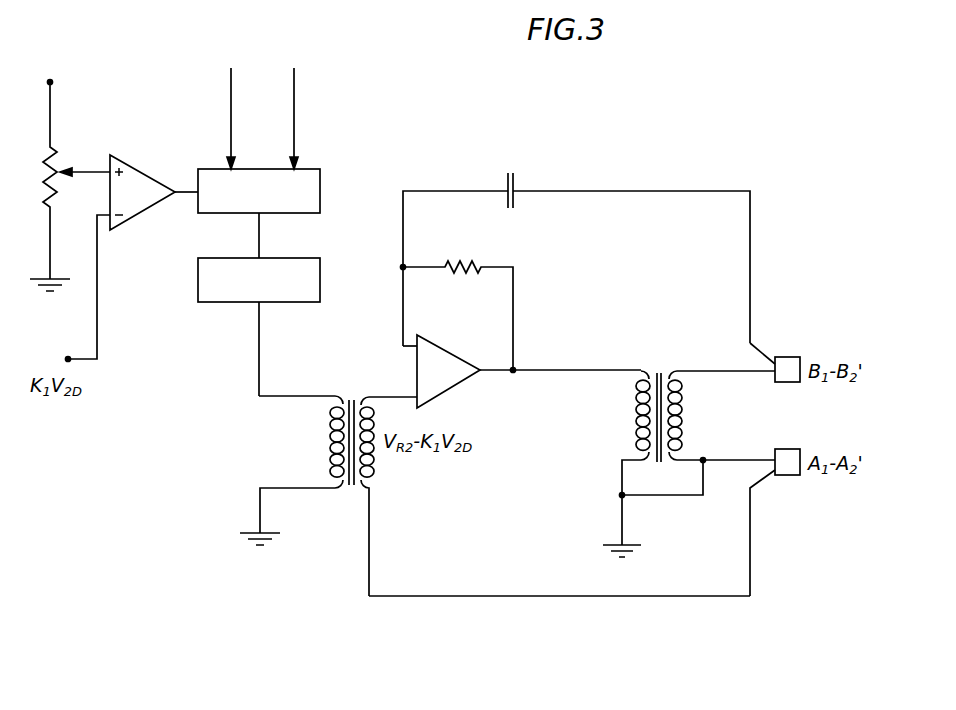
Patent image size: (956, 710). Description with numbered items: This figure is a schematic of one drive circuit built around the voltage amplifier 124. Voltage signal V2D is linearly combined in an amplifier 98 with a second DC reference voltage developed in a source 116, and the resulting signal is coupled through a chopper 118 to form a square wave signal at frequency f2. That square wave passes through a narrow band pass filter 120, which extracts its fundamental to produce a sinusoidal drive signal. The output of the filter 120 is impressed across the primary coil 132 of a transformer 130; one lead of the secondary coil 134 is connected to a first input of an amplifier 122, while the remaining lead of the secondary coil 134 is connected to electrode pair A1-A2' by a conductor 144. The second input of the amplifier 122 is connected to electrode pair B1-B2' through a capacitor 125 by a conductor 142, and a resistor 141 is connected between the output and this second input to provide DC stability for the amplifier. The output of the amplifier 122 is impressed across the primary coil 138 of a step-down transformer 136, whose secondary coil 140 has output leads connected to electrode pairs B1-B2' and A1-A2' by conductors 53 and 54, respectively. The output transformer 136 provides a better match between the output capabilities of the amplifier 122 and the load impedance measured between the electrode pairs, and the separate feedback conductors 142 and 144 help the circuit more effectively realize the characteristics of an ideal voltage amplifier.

The source 116 is at (63, 146).
The amplifier 98 is at (147, 174).
The chopper 118 is at (320, 177).
The narrow band pass filter 120 is at (320, 276).
The transformer 130 is at (339, 472).
The primary coil 132 is at (330, 435).
The secondary coil 134 is at (372, 473).
The amplifier 122 is at (452, 390).
The resistor 141 is at (470, 262).
The voltage amplifier 124 is at (576, 243).
The capacitor 125 is at (514, 184).
The conductor 142 is at (625, 193).
The step-down transformer 136 is at (674, 437).
The primary coil 138 is at (633, 418).
The secondary coil 140 is at (672, 423).
The conductor 53 is at (714, 370).
The conductor 54 is at (733, 463).
The conductor 144 is at (578, 598).